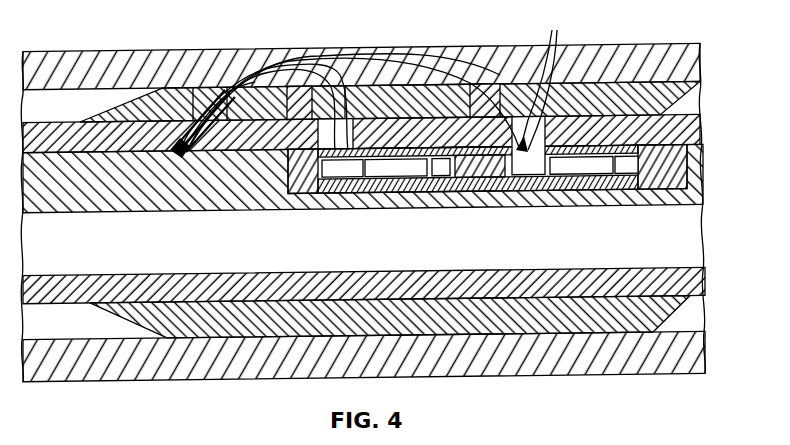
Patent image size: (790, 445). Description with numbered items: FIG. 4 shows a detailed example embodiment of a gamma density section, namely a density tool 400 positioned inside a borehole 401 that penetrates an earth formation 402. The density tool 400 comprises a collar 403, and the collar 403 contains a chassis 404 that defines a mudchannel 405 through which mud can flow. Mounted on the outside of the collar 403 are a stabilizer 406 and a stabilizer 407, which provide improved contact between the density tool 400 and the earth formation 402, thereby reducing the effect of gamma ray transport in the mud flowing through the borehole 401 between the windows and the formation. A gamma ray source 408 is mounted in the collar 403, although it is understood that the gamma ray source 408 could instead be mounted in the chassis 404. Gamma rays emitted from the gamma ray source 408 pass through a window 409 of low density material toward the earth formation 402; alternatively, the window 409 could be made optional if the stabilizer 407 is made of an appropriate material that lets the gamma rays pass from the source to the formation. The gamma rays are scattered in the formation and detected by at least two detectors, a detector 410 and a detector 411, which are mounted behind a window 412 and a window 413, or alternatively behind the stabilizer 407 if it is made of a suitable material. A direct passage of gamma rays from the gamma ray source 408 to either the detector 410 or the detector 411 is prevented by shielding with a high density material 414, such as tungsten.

The density tool 400 is at (66, 118).
The borehole 401 is at (100, 340).
The earth formation 402 is at (615, 45).
The collar 403 is at (699, 100).
The chassis 404 is at (120, 214).
The mudchannel 405 is at (238, 248).
The stabilizer 406 is at (522, 333).
The stabilizer 407 is at (668, 102).
The gamma ray source 408 is at (178, 153).
The window 409 is at (197, 122).
The detector 410 is at (348, 184).
The detector 411 is at (525, 180).
The window 412 is at (352, 150).
The window 413 is at (541, 91).
The high density material 414 is at (607, 197).